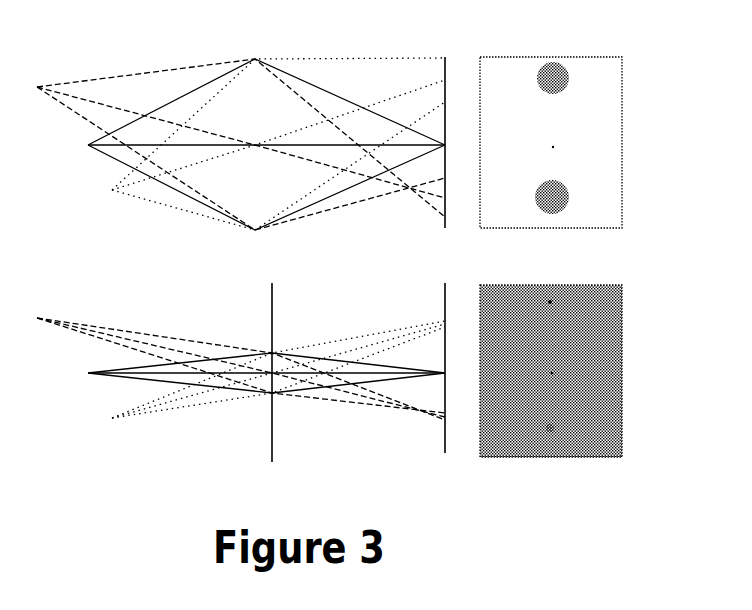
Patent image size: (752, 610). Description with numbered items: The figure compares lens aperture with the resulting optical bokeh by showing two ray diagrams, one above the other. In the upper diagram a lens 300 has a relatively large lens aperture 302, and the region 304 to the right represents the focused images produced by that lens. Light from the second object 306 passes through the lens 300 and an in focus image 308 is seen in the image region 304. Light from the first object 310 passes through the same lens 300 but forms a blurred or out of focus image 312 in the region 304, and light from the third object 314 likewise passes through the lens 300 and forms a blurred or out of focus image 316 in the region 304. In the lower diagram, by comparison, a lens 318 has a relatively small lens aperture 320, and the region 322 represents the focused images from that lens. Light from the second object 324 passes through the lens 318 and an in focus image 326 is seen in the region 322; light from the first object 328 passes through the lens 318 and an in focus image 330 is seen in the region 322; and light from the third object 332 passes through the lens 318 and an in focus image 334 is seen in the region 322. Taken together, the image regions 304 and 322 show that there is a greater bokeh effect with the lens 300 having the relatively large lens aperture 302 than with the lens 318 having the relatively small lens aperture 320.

The lens 300 is at (262, 186).
The large lens aperture 302 is at (343, 41).
The focused images 304 is at (622, 87).
The object 2 306 is at (71, 186).
The in focus image 308 is at (554, 141).
The object 1 310 is at (39, 130).
The blurred or out of focus image 312 is at (551, 193).
The object 3 314 is at (117, 240).
The blurred or out of focus image 316 is at (549, 84).
The lens 318 is at (259, 428).
The small lens aperture 320 is at (346, 273).
The focused images 322 is at (622, 331).
The object 2 324 is at (74, 406).
The in focus image 326 is at (556, 371).
The object 1 328 is at (41, 351).
The in focus image 330 is at (552, 427).
The object 3 332 is at (116, 465).
The in focus image 334 is at (552, 303).